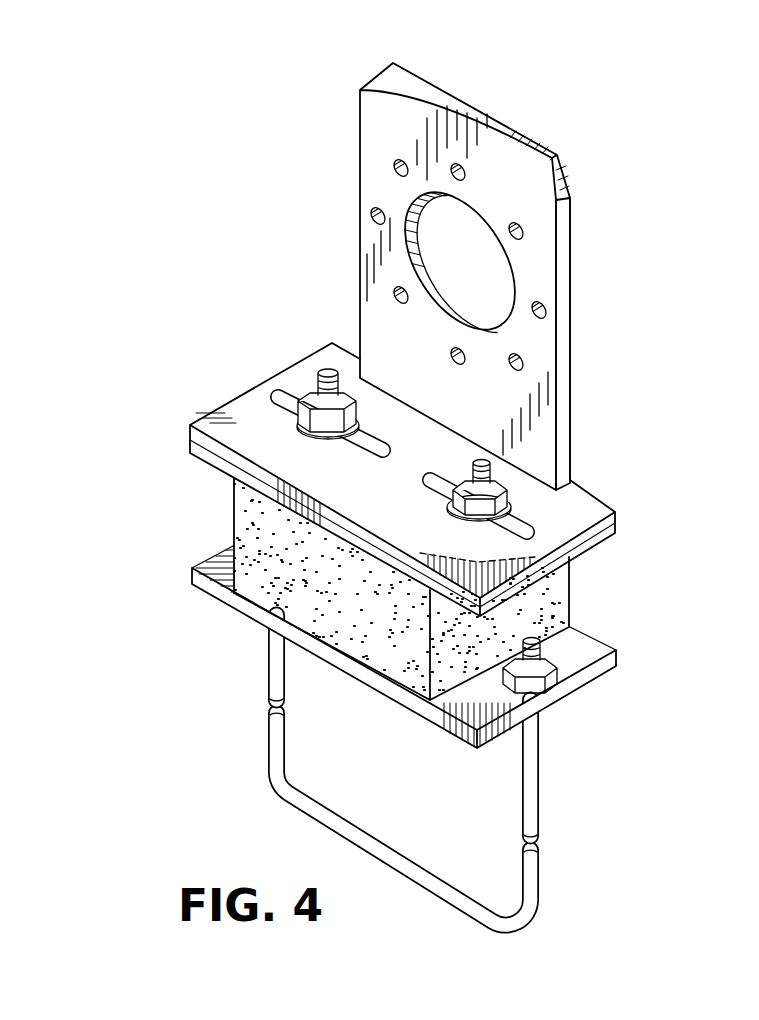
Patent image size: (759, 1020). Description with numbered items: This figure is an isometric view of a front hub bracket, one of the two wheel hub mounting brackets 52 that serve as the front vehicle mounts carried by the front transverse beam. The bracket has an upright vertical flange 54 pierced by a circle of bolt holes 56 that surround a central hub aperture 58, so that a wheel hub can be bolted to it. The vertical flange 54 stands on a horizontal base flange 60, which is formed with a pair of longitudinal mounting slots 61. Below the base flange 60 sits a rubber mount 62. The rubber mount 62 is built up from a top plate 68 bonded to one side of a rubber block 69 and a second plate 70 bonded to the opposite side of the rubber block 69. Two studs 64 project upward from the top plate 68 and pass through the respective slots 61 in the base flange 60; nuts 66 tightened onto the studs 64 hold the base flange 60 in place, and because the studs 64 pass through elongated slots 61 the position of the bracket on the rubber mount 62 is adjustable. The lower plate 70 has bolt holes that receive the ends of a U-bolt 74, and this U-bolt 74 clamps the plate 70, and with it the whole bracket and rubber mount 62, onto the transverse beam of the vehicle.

The wheel hub mounting bracket 52 is at (600, 436).
The vertical flange 54 is at (384, 121).
The bolt holes 56 is at (393, 163).
The hub aperture 58 is at (508, 265).
The base flange 60 is at (233, 426).
The longitudinal mounting slots 61 is at (281, 392).
The rubber mount 62 is at (606, 588).
The studs 64 is at (323, 370).
The nuts 66 is at (297, 424).
The top plate 68 is at (604, 544).
The rubber block 69 is at (563, 601).
The plate 70 is at (603, 668).
The U-bolt 74 is at (540, 803).